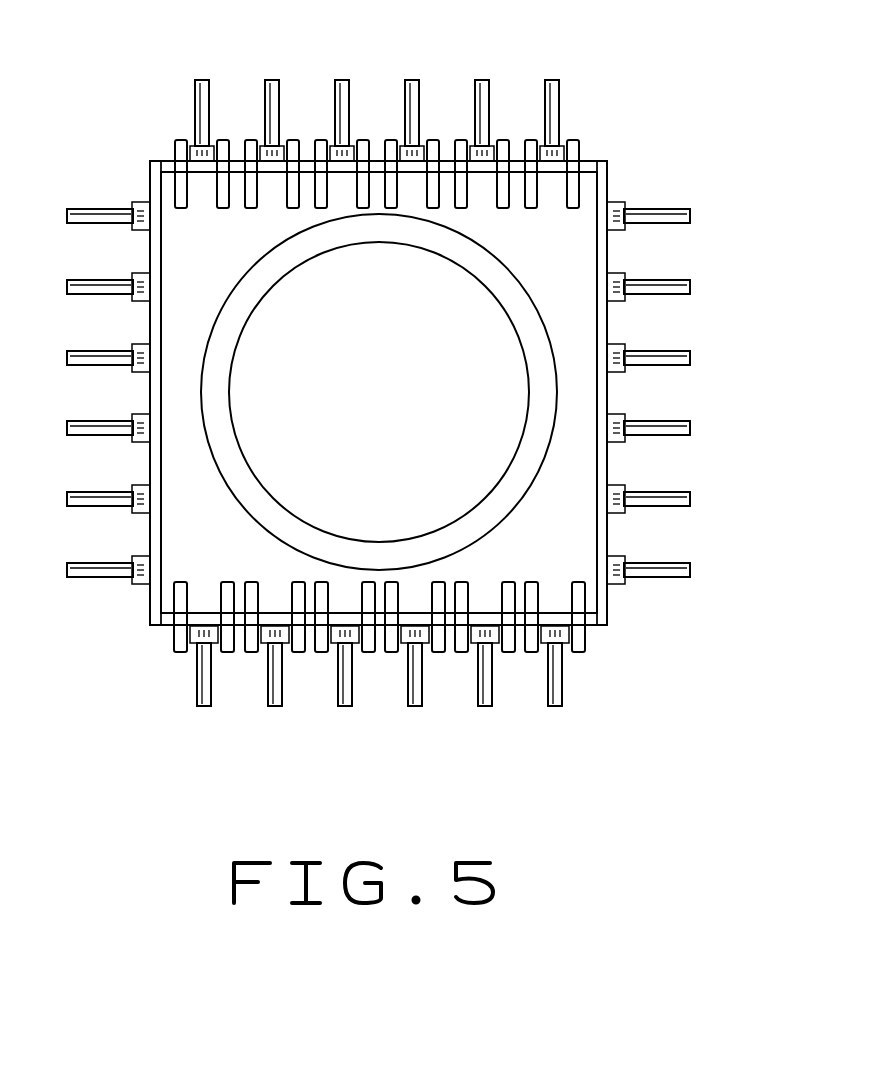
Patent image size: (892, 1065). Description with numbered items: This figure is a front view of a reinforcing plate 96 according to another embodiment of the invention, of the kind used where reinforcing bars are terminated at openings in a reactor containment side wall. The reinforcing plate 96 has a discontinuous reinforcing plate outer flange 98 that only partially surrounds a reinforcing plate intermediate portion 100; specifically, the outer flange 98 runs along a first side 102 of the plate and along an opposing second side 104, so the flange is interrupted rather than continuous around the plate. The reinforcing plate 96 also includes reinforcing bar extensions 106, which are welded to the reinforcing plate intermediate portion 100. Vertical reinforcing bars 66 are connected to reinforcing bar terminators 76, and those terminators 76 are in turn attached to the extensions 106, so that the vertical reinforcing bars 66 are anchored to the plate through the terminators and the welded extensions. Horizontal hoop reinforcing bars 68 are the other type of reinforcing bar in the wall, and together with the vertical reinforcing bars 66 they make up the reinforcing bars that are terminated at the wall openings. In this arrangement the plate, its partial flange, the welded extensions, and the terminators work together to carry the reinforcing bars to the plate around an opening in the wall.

The reinforcing plate 96 is at (713, 87).
The reinforcing plate intermediate portion 100 is at (578, 548).
The discontinuous reinforcing plate outer flange 98 is at (517, 160).
The first side 102 is at (148, 154).
The second side 104 is at (622, 168).
The vertical reinforcing bar 66 is at (276, 81).
The reinforcing bar terminator 76 is at (262, 145).
The reinforcing bar extension 106 is at (295, 142).
The horizontal hoop reinforcing bar 68 is at (675, 364).